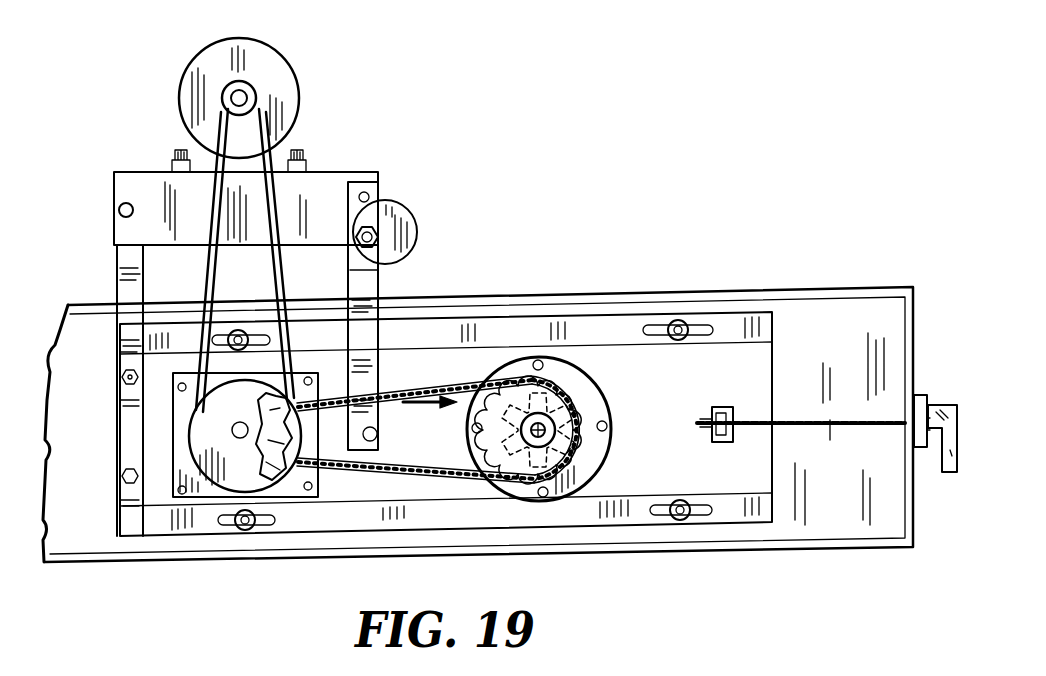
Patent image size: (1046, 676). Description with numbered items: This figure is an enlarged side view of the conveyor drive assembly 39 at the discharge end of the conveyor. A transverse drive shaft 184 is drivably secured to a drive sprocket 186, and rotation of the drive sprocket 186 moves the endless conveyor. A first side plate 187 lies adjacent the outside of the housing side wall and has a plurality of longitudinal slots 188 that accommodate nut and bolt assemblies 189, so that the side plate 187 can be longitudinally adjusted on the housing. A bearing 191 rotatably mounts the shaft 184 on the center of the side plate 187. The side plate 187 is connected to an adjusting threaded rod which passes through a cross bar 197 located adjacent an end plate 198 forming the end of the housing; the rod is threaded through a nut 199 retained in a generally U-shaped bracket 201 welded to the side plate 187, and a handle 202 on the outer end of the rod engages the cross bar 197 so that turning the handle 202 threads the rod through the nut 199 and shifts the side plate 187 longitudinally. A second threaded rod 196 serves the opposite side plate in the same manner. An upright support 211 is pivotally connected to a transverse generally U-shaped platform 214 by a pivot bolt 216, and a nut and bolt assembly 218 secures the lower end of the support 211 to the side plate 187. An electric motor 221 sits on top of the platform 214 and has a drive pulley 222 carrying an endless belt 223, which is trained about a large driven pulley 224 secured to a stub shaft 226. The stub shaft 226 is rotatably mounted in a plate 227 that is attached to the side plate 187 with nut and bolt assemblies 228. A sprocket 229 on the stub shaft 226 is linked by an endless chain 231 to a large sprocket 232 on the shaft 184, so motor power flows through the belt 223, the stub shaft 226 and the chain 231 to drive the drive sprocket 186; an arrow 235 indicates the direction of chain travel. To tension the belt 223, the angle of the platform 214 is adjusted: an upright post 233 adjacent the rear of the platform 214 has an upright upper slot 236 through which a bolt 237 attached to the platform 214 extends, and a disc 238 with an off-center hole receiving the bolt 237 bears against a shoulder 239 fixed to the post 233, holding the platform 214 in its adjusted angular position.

The drive assembly 39 is at (106, 146).
The transverse drive shaft 184 is at (557, 429).
The drive sprocket 186 is at (583, 410).
The first side plate 187 is at (757, 362).
The longitudinal slots 188 is at (236, 332).
The nut and bolt assemblies 189 is at (268, 341).
The bearing 191 is at (585, 392).
The adjusting threaded rod 196 is at (852, 428).
The cross bar 197 is at (920, 400).
The end plate 198 is at (908, 350).
The nut 199 is at (712, 440).
The U-shaped bracket 201 is at (720, 406).
The handle 202 is at (950, 478).
The upright support 211 is at (116, 274).
The platform 214 is at (152, 178).
The pivot bolt 216 is at (119, 210).
The nut and bolt assembly 218 is at (127, 372).
The electric motor 221 is at (280, 80).
The drive pulley 222 is at (256, 98).
The endless belt 223 is at (215, 256).
The large driven pulley 224 is at (195, 432).
The stub shaft 226 is at (245, 424).
The plate 227 is at (173, 489).
The nut and bolt assemblies 228 is at (182, 388).
The sprocket 229 is at (292, 496).
The endless chain 231 is at (450, 384).
The large sprocket 232 is at (482, 436).
The upright post 233 is at (380, 292).
The direction arrow 235 is at (427, 415).
The upright upper slot 236 is at (372, 198).
The bolt 237 is at (358, 234).
The disc 238 is at (402, 222).
The shoulder 239 is at (352, 276).